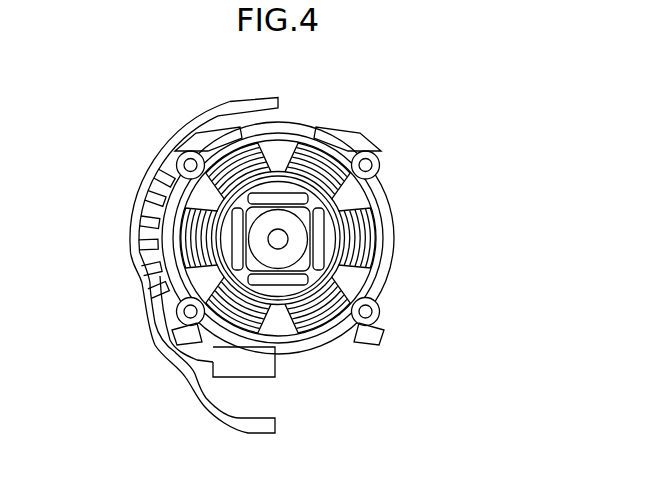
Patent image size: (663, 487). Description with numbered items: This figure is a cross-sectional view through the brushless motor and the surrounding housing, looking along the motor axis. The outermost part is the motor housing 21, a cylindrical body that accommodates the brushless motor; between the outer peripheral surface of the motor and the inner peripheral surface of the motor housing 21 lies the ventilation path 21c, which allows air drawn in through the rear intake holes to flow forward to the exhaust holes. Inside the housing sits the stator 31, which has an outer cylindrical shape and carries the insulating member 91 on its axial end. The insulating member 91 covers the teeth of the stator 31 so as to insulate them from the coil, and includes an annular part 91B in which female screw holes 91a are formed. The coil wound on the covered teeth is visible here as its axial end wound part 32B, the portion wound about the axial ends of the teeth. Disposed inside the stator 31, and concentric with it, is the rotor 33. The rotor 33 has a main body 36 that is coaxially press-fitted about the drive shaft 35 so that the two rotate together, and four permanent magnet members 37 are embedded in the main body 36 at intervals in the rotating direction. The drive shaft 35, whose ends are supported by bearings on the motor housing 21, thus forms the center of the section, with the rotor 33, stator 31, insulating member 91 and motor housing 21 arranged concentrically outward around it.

The motor housing 21 is at (203, 125).
The ventilation path 21c is at (173, 183).
The stator 31 is at (362, 141).
The axial end wound part 32B is at (316, 163).
The rotor 33 is at (299, 321).
The drive shaft 35 is at (281, 242).
The main body 36 is at (277, 296).
The permanent magnet members 37 is at (288, 282).
The insulating member 91 is at (390, 204).
The annular part 91B is at (385, 235).
The female screw holes 91a is at (368, 312).